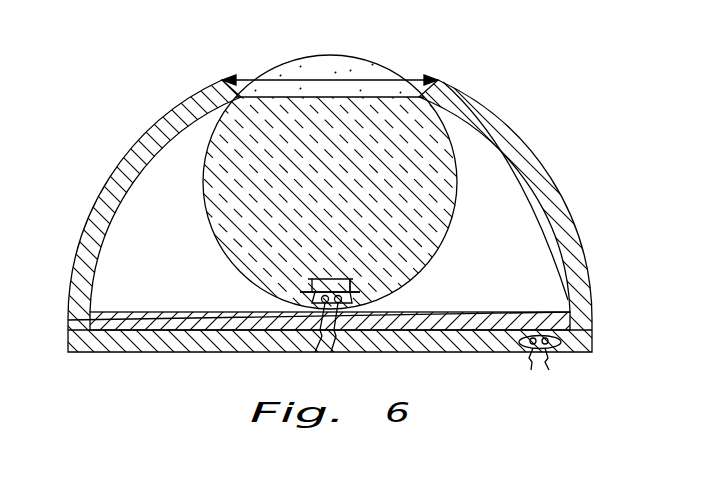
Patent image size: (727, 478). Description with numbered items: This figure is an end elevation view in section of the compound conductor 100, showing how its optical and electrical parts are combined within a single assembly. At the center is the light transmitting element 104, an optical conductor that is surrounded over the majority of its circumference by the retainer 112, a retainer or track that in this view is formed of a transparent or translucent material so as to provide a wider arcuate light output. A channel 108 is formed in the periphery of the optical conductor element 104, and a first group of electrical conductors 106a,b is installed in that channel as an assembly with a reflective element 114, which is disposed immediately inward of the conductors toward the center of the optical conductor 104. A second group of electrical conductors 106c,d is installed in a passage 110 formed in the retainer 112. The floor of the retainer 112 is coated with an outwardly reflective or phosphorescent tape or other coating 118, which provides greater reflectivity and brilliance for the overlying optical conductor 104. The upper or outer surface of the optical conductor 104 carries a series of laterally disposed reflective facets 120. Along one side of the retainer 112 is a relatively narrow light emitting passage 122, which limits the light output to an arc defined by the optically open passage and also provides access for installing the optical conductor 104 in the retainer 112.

The compound conductor 100 is at (176, 372).
The light transmitting element 104 is at (200, 203).
The electrical conductors 106a,b is at (321, 339).
The electrical conductors 106c,d is at (546, 373).
The channel 108 is at (300, 287).
The passage 110 is at (596, 338).
The retainer 112 is at (137, 137).
The reflective element 114 is at (362, 292).
The reflective or phosphorescent coating 118 is at (490, 312).
The reflective facets 120 is at (336, 62).
The light emitting passage 122 is at (316, 80).